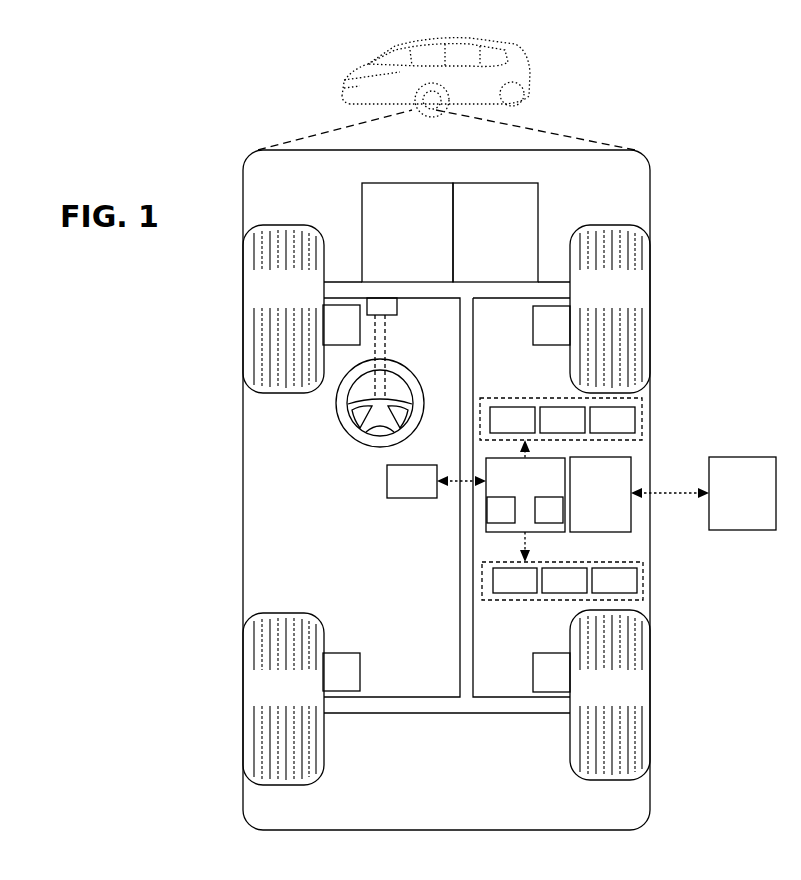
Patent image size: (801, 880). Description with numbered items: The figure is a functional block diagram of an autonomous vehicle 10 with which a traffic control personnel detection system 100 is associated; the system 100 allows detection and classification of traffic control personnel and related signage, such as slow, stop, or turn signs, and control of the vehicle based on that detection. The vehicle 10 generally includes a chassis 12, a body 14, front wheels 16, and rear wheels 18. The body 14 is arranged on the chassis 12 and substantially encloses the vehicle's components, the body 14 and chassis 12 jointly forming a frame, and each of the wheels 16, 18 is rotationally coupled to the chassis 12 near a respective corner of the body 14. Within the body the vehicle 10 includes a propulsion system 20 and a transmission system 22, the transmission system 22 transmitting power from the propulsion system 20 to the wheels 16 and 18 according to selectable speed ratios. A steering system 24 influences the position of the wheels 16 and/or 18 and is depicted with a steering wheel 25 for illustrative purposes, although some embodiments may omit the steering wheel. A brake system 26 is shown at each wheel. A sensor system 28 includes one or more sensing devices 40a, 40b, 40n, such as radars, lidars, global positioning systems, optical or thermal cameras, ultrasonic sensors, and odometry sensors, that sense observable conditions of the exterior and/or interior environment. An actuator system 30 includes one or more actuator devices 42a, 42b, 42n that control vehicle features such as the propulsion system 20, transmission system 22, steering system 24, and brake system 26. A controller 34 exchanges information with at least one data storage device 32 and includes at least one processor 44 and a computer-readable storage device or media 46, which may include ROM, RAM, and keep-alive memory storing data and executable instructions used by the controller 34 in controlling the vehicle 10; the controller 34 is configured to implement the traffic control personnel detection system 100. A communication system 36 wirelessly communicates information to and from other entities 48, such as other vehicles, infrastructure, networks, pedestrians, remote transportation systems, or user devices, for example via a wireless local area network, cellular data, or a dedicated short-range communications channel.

The vehicle 10 is at (330, 71).
The traffic control personnel detection system 100 is at (672, 346).
The chassis 12 is at (470, 714).
The body 14 is at (242, 462).
The front wheels 16 is at (446, 309).
The rear wheels 18 is at (446, 697).
The propulsion system 20 is at (407, 232).
The transmission system 22 is at (495, 232).
The steering system 24 is at (361, 452).
The steering wheel 25 is at (410, 368).
The brake system 26 is at (446, 498).
The sensor system 28 is at (561, 399).
The actuator system 30 is at (562, 602).
The data storage device 32 is at (412, 481).
The controller 34 is at (525, 495).
The communication system 36 is at (600, 494).
The sensing device 40a is at (512, 420).
The sensing device 40b is at (562, 420).
The sensing device 40n is at (612, 420).
The actuator device 42a is at (515, 580).
The actuator device 42b is at (564, 580).
The actuator device 42n is at (614, 580).
The processor 44 is at (501, 510).
The computer-readable storage device or media 46 is at (549, 510).
The other entities 48 is at (742, 493).